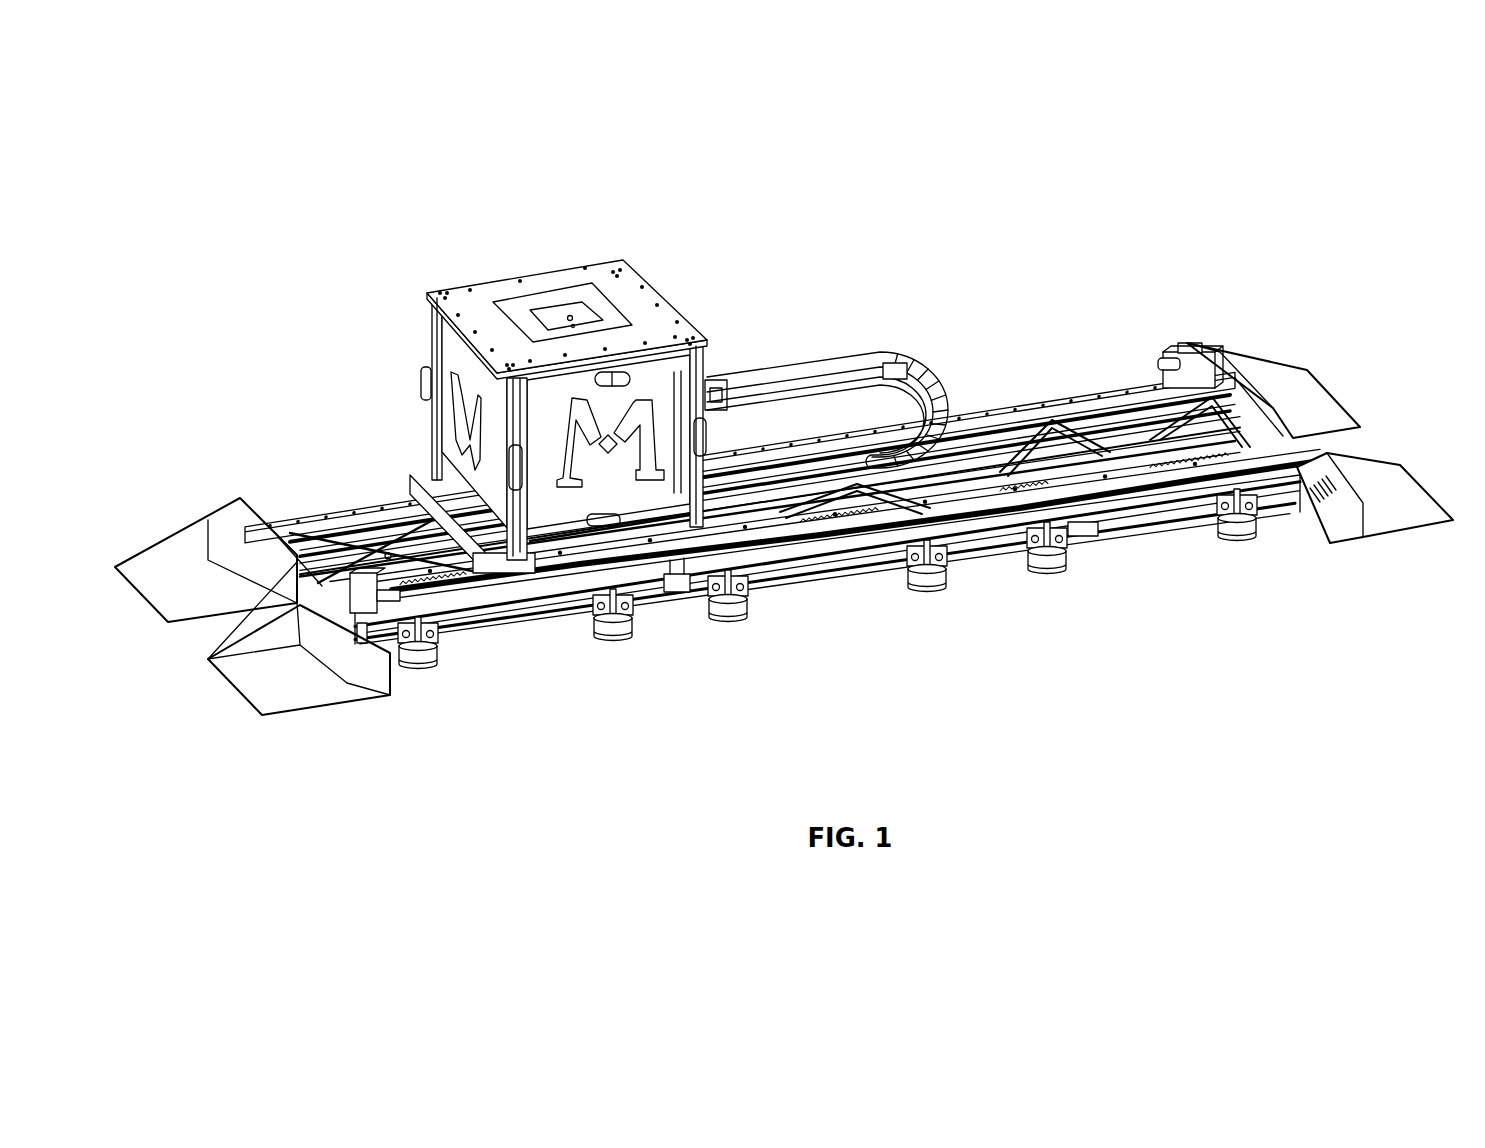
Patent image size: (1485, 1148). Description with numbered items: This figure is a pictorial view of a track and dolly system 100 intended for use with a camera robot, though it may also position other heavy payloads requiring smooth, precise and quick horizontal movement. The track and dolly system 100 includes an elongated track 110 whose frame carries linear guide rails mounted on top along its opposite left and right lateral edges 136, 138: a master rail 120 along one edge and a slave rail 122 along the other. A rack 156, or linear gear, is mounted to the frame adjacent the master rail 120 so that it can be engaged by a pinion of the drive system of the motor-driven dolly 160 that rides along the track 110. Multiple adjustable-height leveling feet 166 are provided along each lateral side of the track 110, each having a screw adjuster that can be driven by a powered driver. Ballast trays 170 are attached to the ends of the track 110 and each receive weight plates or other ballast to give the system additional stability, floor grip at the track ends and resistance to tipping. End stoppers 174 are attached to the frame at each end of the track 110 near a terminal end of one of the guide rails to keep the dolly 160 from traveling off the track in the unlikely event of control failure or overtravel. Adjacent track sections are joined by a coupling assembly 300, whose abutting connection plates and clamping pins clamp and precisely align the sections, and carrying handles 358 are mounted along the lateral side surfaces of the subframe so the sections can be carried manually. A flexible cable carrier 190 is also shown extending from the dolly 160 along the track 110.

The track and dolly system 100 is at (784, 458).
The track 110 is at (975, 392).
The master rail 120 is at (493, 608).
The slave rail 122 is at (318, 513).
The lateral edge 136 is at (817, 562).
The lateral edge 138 is at (380, 505).
The rack 156 is at (1030, 405).
The motor-driven dolly 160 is at (678, 270).
The leveling feet 166 is at (613, 645).
The ballast trays 170 is at (190, 617).
The end stoppers 174 is at (410, 652).
The cable carrier 190 is at (806, 362).
The coupling assembly 300 is at (675, 612).
The carrying handles 358 is at (1082, 532).